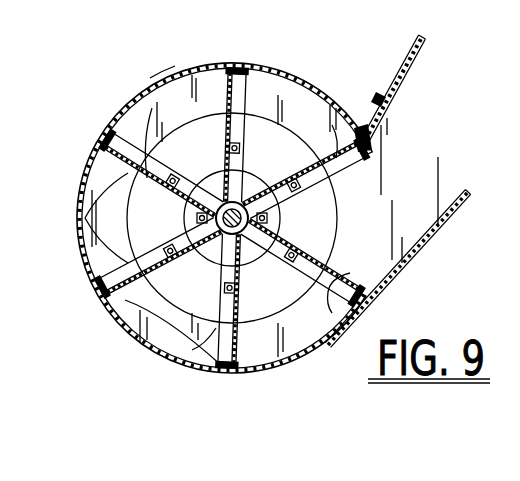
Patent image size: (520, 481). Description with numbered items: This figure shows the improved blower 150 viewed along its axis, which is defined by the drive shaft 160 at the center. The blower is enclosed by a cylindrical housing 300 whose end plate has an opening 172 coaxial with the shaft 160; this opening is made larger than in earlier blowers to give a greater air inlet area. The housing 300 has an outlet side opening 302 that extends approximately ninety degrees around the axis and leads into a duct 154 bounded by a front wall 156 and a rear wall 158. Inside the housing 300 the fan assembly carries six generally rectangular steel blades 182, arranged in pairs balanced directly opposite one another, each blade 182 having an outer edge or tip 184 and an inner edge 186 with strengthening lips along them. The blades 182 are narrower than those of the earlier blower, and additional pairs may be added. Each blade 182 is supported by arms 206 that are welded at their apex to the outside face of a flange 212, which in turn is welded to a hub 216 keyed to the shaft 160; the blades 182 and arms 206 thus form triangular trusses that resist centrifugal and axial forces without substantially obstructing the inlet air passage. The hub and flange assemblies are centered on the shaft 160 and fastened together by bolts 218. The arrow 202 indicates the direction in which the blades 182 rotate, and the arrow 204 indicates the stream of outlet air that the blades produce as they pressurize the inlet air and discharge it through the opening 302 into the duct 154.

The blower 150 is at (88, 121).
The duct 154 is at (492, 156).
The front wall 156 is at (432, 66).
The rear wall 158 is at (428, 236).
The drive shaft 160 is at (337, 240).
The opening 172 is at (188, 122).
The blade 182 is at (230, 70).
The outer edge 184 is at (244, 66).
The inner edge 186 is at (236, 147).
The arrow 202 is at (150, 93).
The arrow 204 is at (400, 163).
The arm 206 is at (248, 112).
The flange 212 is at (181, 151).
The hub 216 is at (223, 270).
The bolt 218 is at (272, 215).
The cylindrical housing 300 is at (168, 80).
The outlet side opening 302 is at (405, 217).